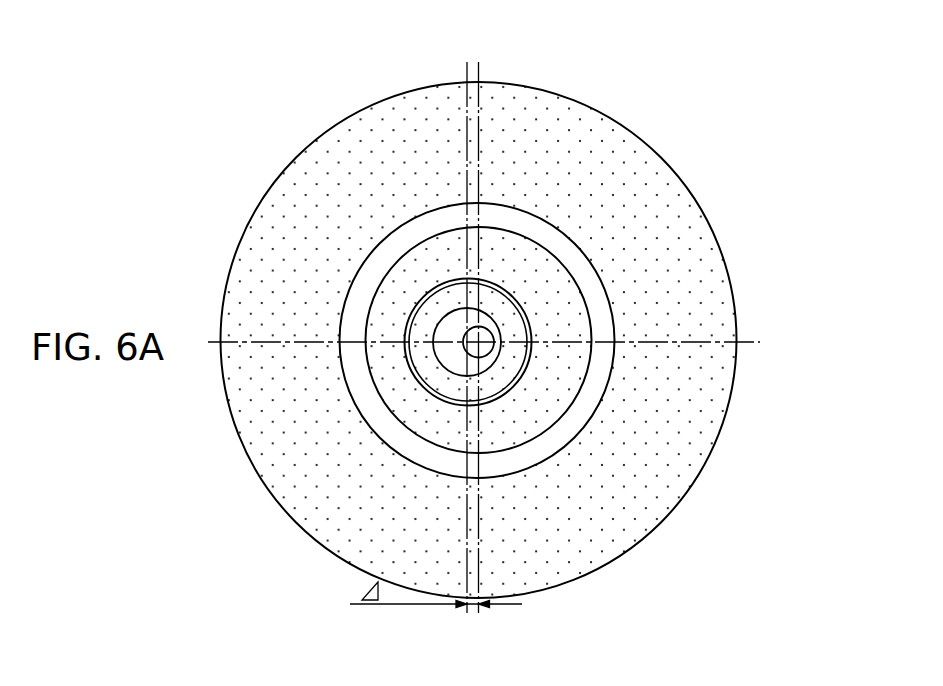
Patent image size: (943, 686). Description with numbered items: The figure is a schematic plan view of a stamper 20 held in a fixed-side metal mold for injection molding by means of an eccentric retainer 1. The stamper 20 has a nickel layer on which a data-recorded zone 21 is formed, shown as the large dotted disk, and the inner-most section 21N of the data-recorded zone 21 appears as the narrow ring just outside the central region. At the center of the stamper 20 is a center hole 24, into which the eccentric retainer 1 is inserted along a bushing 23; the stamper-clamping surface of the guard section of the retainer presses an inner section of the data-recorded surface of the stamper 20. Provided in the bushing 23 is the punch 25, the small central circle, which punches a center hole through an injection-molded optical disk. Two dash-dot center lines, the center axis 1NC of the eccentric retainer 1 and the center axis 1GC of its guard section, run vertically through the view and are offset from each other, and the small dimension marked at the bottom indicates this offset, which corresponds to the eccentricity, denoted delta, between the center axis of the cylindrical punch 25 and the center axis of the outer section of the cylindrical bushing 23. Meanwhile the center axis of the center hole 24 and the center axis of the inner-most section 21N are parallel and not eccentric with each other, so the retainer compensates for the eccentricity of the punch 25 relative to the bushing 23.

The eccentric retainer 1 is at (538, 260).
The center axis of the eccentric retainer 1NC is at (467, 62).
The center axis of the guard section of the eccentric retainer 1GC is at (478, 62).
The stamper 20 is at (720, 290).
The data-recorded zone 21 is at (724, 258).
The inner-most section of the data-recorded zone 21N is at (610, 301).
The bushing 23 is at (507, 308).
The center hole 24 is at (435, 395).
The punch 25 is at (488, 352).